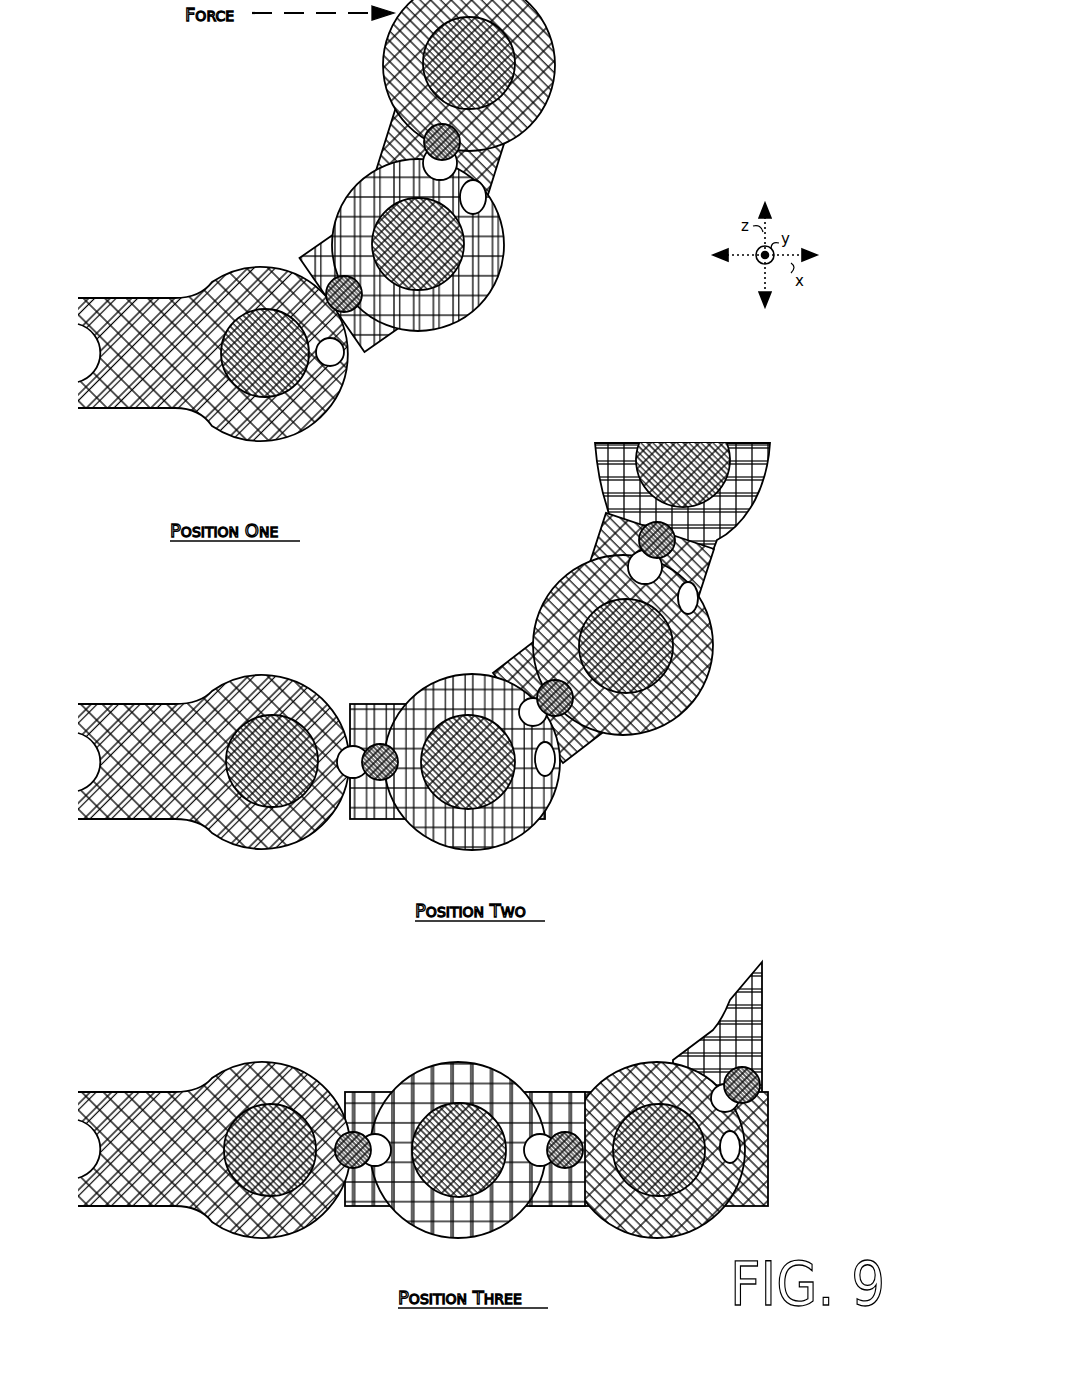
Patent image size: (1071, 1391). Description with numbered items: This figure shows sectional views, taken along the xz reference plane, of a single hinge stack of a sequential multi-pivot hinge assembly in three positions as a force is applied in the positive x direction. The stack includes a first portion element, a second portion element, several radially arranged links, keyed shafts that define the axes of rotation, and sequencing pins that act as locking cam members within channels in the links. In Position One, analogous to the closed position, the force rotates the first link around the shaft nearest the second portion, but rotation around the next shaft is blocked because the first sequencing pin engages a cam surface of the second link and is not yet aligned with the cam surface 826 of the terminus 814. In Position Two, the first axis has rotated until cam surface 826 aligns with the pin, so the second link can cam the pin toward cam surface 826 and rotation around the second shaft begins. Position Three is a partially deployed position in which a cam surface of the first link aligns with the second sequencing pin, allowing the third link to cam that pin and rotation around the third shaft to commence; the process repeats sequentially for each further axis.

The terminus 814 is at (305, 437).
The cam surface 826 is at (343, 366).